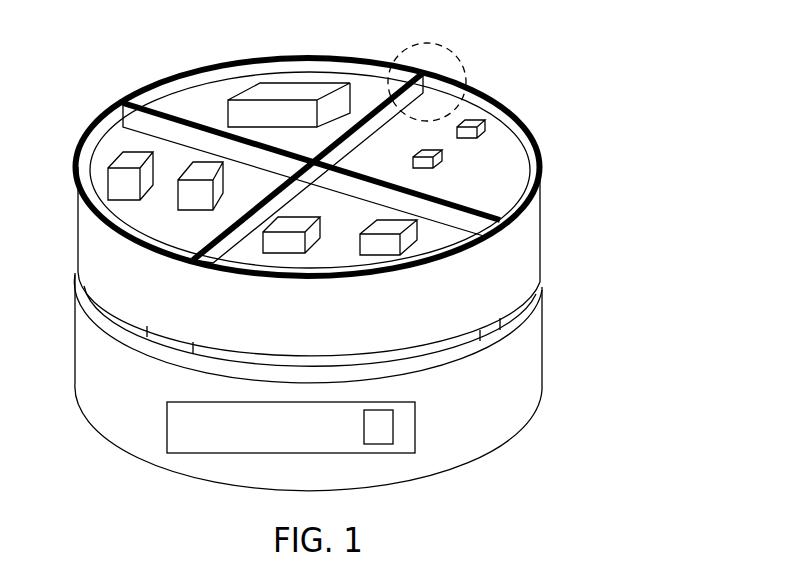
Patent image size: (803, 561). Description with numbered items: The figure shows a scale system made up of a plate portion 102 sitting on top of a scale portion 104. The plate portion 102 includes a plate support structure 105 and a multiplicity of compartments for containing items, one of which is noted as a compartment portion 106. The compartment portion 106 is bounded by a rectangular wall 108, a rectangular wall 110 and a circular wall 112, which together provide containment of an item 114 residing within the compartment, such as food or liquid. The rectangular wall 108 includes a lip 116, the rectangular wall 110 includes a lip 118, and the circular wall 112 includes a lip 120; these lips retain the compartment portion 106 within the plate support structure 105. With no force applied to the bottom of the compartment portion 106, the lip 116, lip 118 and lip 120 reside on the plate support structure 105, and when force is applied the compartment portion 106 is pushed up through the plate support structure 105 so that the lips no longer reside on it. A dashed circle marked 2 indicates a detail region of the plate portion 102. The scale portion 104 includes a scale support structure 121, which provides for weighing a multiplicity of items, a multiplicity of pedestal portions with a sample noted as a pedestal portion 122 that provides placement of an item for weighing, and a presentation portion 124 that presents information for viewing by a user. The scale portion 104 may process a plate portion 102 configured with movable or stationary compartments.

The detail region shown in FIG. 2 is at (440, 42).
The plate portion 102 is at (527, 120).
The scale portion 104 is at (543, 321).
The plate support structure 105 is at (538, 142).
The compartment portion 106 is at (484, 168).
The rectangular wall 108 is at (371, 121).
The rectangular wall 110 is at (443, 217).
The circular wall 112 is at (488, 95).
The item 114 is at (488, 118).
The lip 116 is at (322, 147).
The lip 118 is at (455, 201).
The lip 120 is at (525, 211).
The scale support structure 121 is at (456, 473).
The pedestal portion 122 is at (478, 343).
The presentation portion 124 is at (248, 432).